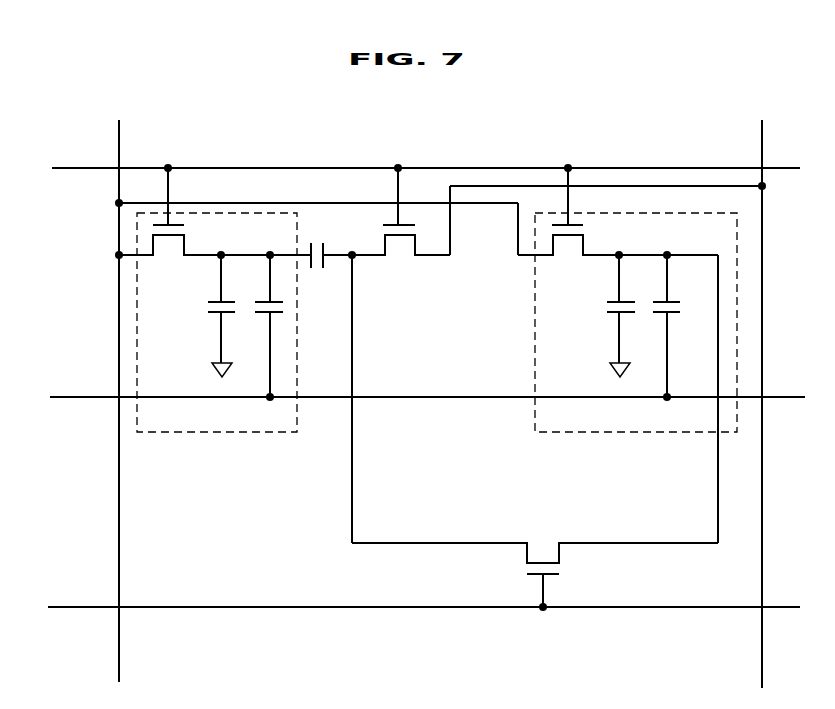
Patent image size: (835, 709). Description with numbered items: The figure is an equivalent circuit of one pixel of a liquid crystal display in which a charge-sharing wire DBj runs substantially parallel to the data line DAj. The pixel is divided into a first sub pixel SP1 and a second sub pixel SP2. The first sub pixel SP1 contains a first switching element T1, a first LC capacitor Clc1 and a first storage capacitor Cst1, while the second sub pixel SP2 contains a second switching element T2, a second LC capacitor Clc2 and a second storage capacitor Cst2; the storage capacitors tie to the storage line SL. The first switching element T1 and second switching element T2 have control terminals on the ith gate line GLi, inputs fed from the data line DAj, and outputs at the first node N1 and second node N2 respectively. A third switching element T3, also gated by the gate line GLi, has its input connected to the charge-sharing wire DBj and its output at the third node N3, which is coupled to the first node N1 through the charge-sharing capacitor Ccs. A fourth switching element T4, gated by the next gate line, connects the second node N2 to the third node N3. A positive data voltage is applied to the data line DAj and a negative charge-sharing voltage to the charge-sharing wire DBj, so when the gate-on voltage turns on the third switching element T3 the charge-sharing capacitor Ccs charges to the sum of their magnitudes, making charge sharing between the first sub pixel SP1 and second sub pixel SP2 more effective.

The ith gate line GLi is at (410, 168).
The storage line SL is at (414, 397).
The data line DAj is at (330, 391).
The charge-sharing wire DBj is at (611, 394).
The first switching element T1 is at (170, 220).
The second switching element T2 is at (568, 220).
The third switching element T3 is at (401, 220).
The fourth switching element T4 is at (535, 433).
The first node N1 is at (241, 245).
The second node N2 is at (638, 245).
The third node N3 is at (363, 387).
The charge-sharing capacitor Ccs is at (311, 245).
The first LC capacitor Clc1 is at (204, 316).
The first storage capacitor Cst1 is at (284, 326).
The second LC capacitor Clc2 is at (603, 316).
The second storage capacitor Cst2 is at (680, 326).
The first sub pixel SP1 is at (155, 433).
The second sub pixel SP2 is at (615, 433).